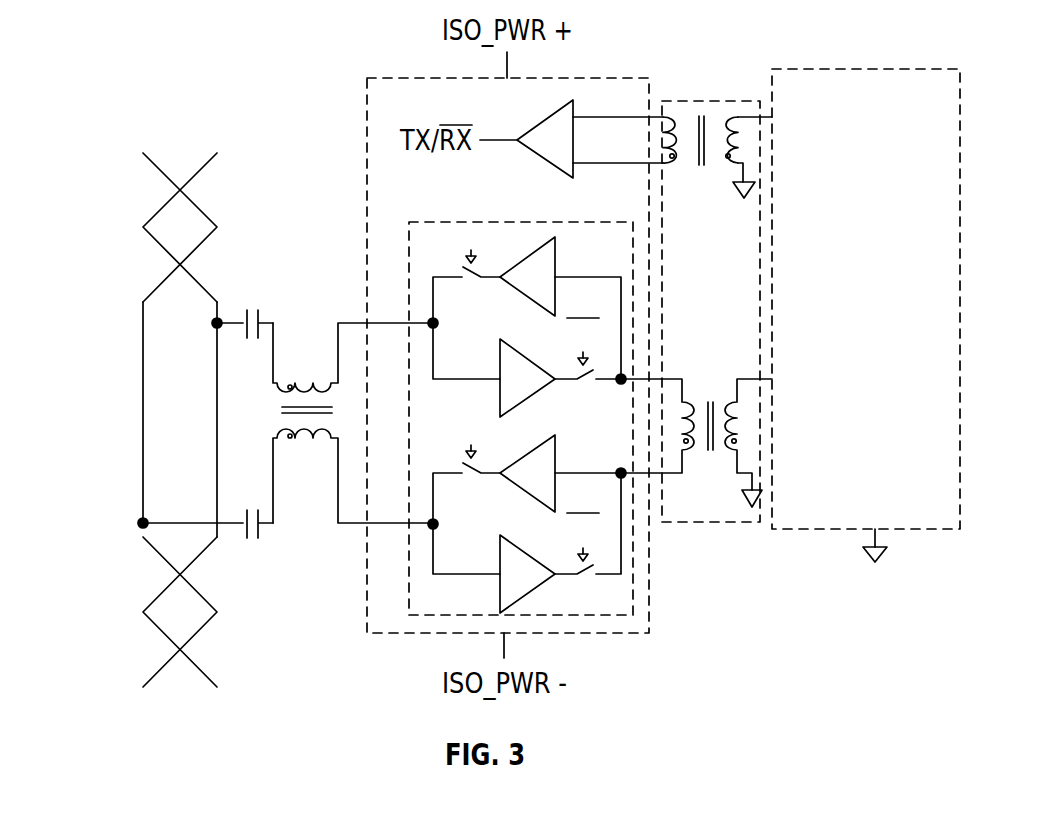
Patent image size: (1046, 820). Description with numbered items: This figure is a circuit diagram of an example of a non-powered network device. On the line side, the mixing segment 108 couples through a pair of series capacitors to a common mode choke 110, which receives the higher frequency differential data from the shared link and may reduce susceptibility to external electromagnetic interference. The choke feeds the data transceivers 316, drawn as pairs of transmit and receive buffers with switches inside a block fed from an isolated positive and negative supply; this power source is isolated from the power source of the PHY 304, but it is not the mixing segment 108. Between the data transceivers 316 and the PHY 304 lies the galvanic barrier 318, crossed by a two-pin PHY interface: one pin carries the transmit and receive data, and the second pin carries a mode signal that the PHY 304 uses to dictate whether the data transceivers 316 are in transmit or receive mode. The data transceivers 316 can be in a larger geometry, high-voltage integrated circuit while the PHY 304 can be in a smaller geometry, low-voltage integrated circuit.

The mixing segment 108 is at (127, 393).
The common mode choke 110 is at (308, 271).
The PHY 304 is at (855, 69).
The data transceivers 316 is at (450, 220).
The galvanic barrier 318 is at (740, 523).